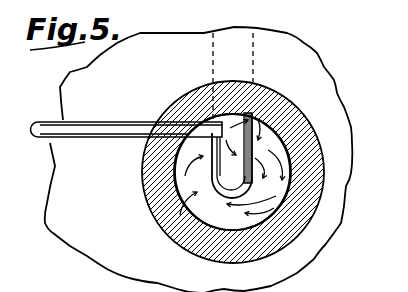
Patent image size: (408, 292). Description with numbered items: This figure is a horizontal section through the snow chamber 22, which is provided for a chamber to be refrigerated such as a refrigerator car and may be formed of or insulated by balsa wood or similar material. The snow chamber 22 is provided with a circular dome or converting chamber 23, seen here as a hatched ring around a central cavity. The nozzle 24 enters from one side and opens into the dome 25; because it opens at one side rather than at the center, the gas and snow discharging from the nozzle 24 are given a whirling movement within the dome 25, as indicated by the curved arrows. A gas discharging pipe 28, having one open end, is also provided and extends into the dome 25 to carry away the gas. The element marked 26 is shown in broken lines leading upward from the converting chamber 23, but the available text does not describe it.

The snow chamber 22 is at (336, 252).
The converting chamber 23 is at (171, 240).
The nozzle 24 is at (83, 126).
The dome 25 is at (188, 205).
The outlet tube 26 is at (246, 91).
The gas discharging pipe 28 is at (232, 170).